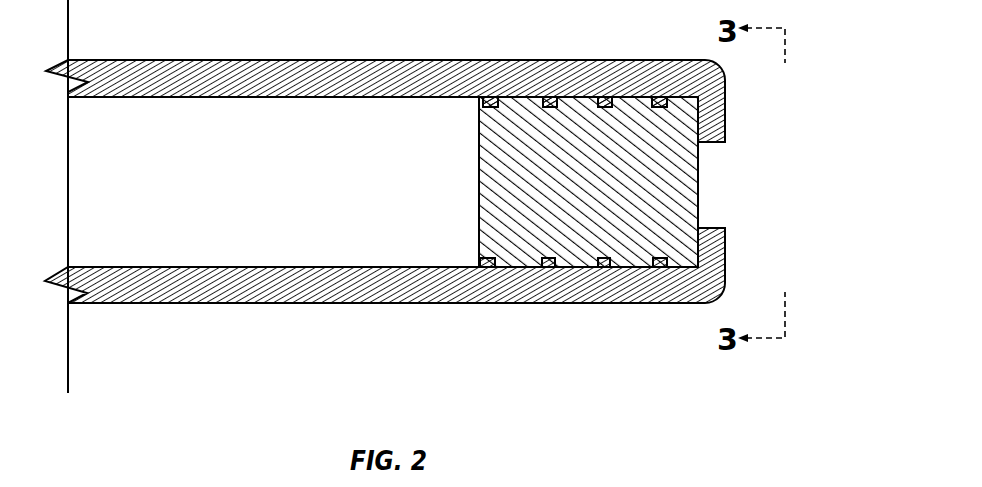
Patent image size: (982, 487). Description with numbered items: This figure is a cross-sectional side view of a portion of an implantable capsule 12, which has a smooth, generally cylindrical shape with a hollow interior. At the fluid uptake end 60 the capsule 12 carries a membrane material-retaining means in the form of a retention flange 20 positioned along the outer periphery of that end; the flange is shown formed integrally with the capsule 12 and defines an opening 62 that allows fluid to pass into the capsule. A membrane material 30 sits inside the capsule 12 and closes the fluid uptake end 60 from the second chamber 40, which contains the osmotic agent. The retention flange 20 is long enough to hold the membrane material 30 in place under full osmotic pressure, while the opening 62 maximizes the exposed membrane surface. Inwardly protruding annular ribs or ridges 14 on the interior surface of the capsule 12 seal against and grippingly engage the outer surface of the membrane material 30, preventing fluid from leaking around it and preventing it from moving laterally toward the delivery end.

The capsule 12 is at (187, 307).
The ribs or ridges 14 is at (605, 100).
The retention flange 20 is at (725, 258).
The membrane material 30 is at (478, 190).
The second chamber 40 is at (200, 125).
The fluid uptake end 60 is at (725, 126).
The opening 62 is at (710, 181).